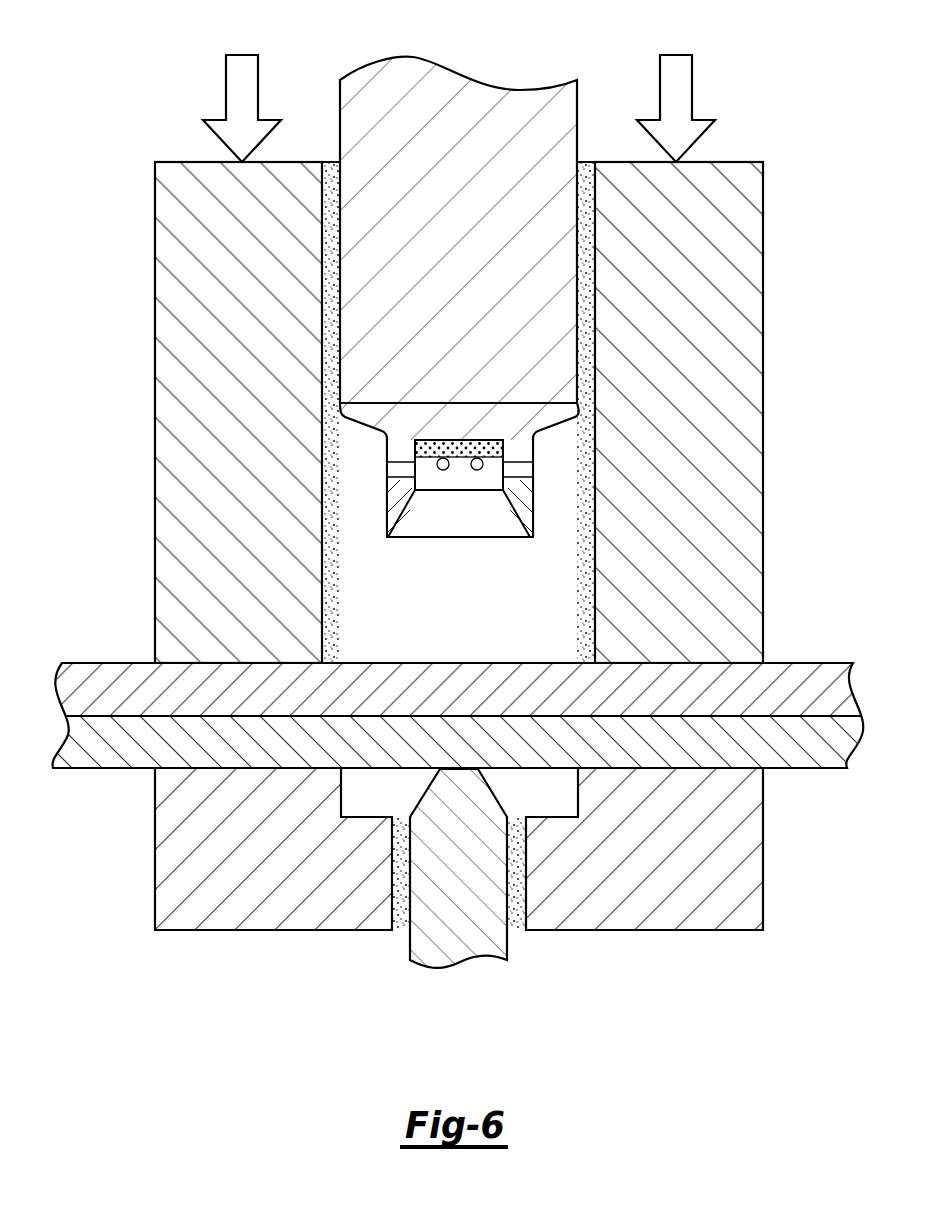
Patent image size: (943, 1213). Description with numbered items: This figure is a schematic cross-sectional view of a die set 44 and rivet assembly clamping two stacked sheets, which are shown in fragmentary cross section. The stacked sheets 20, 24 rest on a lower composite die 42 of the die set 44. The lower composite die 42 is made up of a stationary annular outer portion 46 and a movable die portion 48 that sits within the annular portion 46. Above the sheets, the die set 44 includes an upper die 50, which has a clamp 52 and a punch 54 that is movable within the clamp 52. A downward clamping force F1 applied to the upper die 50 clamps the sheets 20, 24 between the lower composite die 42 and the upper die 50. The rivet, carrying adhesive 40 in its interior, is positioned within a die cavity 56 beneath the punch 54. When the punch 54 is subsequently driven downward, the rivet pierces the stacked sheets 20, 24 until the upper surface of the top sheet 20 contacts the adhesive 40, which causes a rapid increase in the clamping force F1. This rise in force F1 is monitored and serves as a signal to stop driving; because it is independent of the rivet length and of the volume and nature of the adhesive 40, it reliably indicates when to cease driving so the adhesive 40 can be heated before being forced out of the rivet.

The top sheet 20 is at (816, 663).
The sheet 24 is at (808, 769).
The adhesive 40 is at (463, 456).
The lower composite die 42 is at (155, 890).
The die set 44 is at (407, 412).
The stationary annular outer portion 46 is at (155, 813).
The movable die portion 48 is at (410, 950).
The upper die 50 is at (155, 402).
The clamp 52 is at (155, 519).
The punch 54 is at (449, 72).
The die cavity 56 is at (474, 652).
The downward clamping force F1 is at (226, 93).